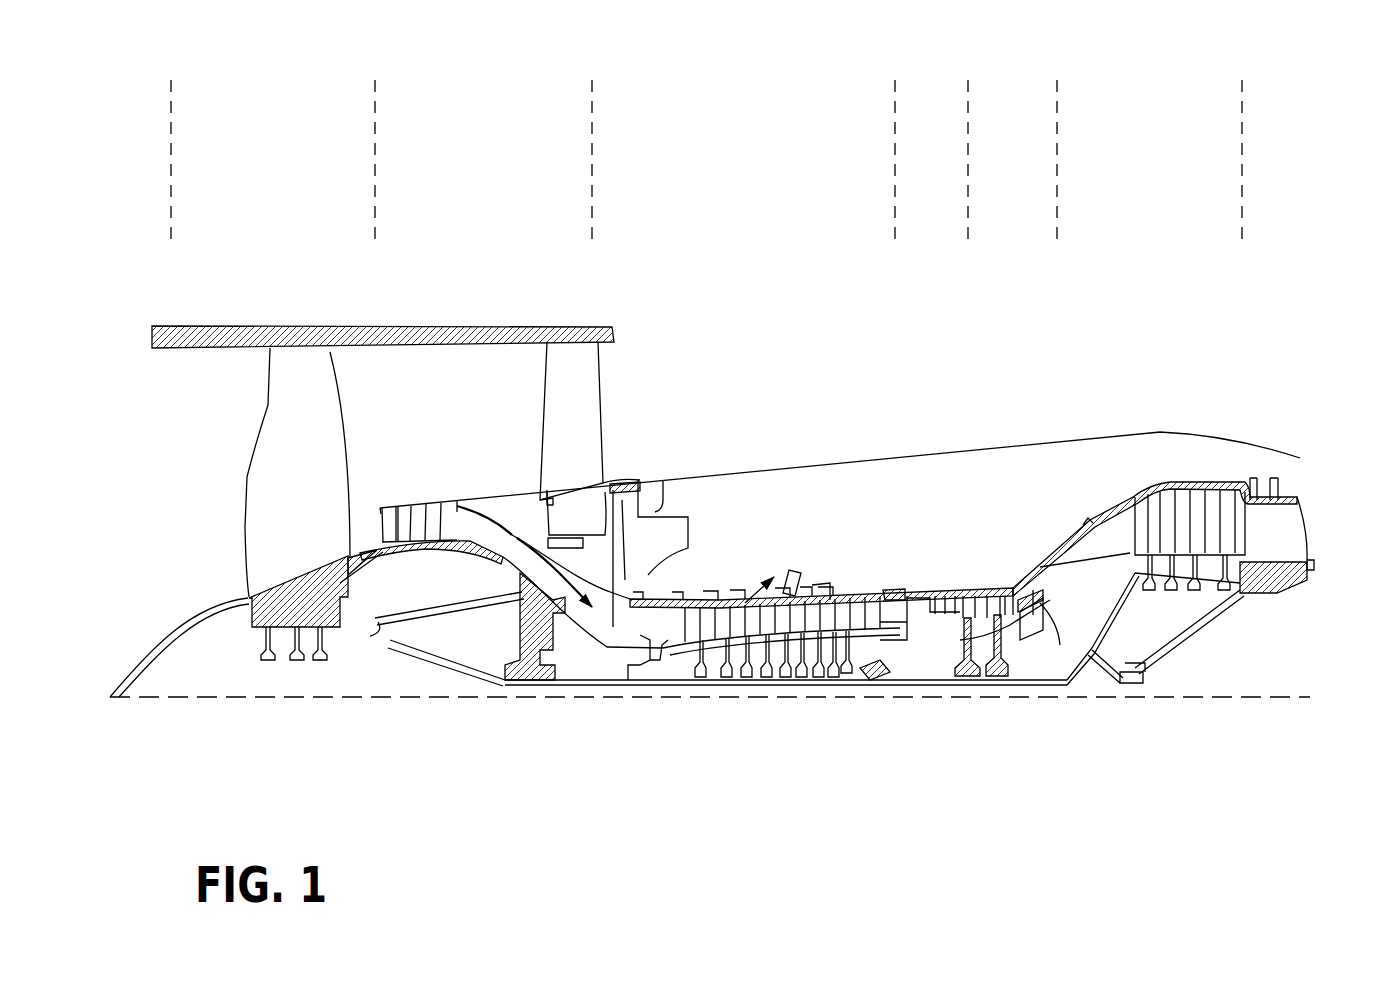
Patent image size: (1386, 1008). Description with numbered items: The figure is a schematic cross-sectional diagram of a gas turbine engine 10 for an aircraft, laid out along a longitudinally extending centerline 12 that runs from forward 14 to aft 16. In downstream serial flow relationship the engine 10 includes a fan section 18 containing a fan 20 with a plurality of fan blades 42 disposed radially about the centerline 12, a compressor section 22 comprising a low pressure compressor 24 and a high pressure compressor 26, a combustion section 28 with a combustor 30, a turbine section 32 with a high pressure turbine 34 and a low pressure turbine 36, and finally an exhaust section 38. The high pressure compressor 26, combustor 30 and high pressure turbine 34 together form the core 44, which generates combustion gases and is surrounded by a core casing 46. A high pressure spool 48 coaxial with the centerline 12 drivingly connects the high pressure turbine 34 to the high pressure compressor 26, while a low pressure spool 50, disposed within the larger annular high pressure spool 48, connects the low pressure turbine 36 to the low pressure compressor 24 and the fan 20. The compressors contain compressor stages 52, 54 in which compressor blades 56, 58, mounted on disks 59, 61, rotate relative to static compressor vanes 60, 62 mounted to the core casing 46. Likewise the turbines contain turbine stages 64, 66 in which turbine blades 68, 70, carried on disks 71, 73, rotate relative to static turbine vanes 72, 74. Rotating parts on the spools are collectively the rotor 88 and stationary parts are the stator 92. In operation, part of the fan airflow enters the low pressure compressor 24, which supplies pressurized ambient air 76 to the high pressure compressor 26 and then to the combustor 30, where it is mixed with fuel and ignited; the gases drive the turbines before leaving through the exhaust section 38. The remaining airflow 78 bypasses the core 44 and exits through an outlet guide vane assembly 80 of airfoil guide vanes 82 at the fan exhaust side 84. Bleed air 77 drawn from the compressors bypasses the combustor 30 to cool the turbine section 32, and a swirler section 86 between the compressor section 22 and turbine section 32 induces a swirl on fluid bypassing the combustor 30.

The gas turbine engine 10 is at (920, 322).
The centerline 12 is at (272, 699).
The forward 14 is at (120, 462).
The aft 16 is at (1332, 551).
The fan section 18 is at (373, 158).
The fan 20 is at (208, 540).
The compressor section 22 is at (893, 72).
The low pressure compressor 24 is at (590, 158).
The high pressure compressor 26 is at (893, 158).
The combustion section 28 is at (897, 158).
The combustor 30 is at (937, 598).
The turbine section 32 is at (1242, 72).
The high pressure turbine 34 is at (1055, 158).
The low pressure turbine 36 is at (1240, 158).
The exhaust section 38 is at (1316, 503).
The fan blades 42 is at (328, 406).
The core 44 is at (873, 500).
The core casing 46 is at (1105, 503).
The high pressure spool 48 is at (928, 688).
The low pressure spool 50 is at (522, 690).
The compressor stages 52 is at (438, 450).
The compressor stages 54 is at (727, 495).
The compressor blades 56 is at (412, 510).
The compressor blades 58 is at (660, 600).
The disk 59 is at (405, 553).
The static compressor vanes 60 is at (390, 510).
The disk 61 is at (662, 665).
The static compressor vanes 62 is at (668, 578).
The turbine stages 64 is at (1033, 522).
The turbine stages 66 is at (1222, 377).
The turbine blades 68 is at (990, 596).
The turbine blades 70 is at (1226, 498).
The disk 71 is at (985, 673).
The static turbine vanes 72 is at (962, 596).
The disk 73 is at (1078, 575).
The static turbine vanes 74 is at (1208, 490).
The pressurized ambient air 76 is at (578, 598).
The bleed air 77 is at (758, 572).
The airflow 78 is at (668, 398).
The outlet guide vane assembly 80 is at (619, 450).
The airfoil guide vanes 82 is at (553, 437).
The fan exhaust side 84 is at (650, 356).
The swirler section 86 is at (870, 677).
The rotor 88 is at (471, 560).
The stator 92 is at (645, 656).